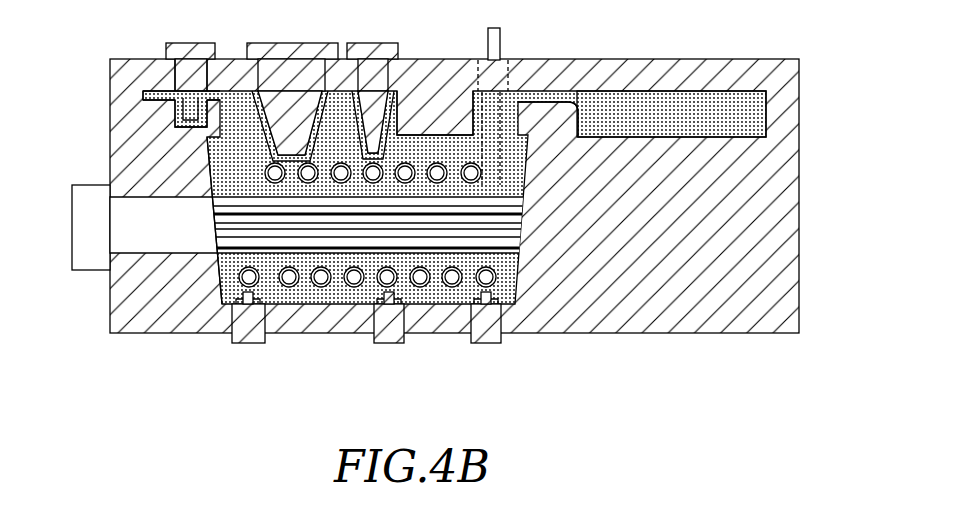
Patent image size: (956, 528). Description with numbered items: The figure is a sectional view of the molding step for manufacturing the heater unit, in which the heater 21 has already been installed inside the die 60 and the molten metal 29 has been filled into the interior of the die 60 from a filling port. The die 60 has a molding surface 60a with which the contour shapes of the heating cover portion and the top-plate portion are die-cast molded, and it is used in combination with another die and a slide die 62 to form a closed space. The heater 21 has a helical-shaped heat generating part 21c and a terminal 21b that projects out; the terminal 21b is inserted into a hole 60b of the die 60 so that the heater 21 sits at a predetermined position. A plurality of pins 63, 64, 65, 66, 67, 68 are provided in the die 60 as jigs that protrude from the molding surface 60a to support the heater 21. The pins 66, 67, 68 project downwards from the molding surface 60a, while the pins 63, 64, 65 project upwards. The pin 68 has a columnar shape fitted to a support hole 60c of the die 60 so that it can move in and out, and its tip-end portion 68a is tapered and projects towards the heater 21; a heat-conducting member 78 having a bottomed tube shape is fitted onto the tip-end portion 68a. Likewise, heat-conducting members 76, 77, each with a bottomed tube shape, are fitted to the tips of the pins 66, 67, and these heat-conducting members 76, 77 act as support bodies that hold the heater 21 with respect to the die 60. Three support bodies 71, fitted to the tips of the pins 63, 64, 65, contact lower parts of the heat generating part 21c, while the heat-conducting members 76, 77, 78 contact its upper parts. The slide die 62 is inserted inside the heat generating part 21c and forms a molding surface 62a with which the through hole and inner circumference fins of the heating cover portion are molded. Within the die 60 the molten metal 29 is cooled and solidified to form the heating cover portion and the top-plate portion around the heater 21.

The die 60 is at (763, 67).
The molding surface 60a is at (700, 95).
The hole 60b is at (478, 58).
The support hole 60c is at (180, 73).
The slide die 62 is at (162, 247).
The molding surface 62a is at (222, 252).
The pin 63 is at (249, 344).
The pin 64 is at (393, 300).
The pin 65 is at (493, 300).
The pin 66 is at (273, 57).
The pin 67 is at (367, 50).
The pin 68 is at (185, 47).
The tip-end portion 68a is at (172, 105).
The support body 71 is at (510, 304).
The heat-conducting member 76 is at (262, 118).
The heat-conducting member 77 is at (383, 120).
The heat-conducting member 78 is at (176, 112).
The heater 21 is at (533, 97).
The terminal 21b is at (495, 53).
The heat generating part 21c is at (331, 292).
The molten metal 29 is at (622, 110).